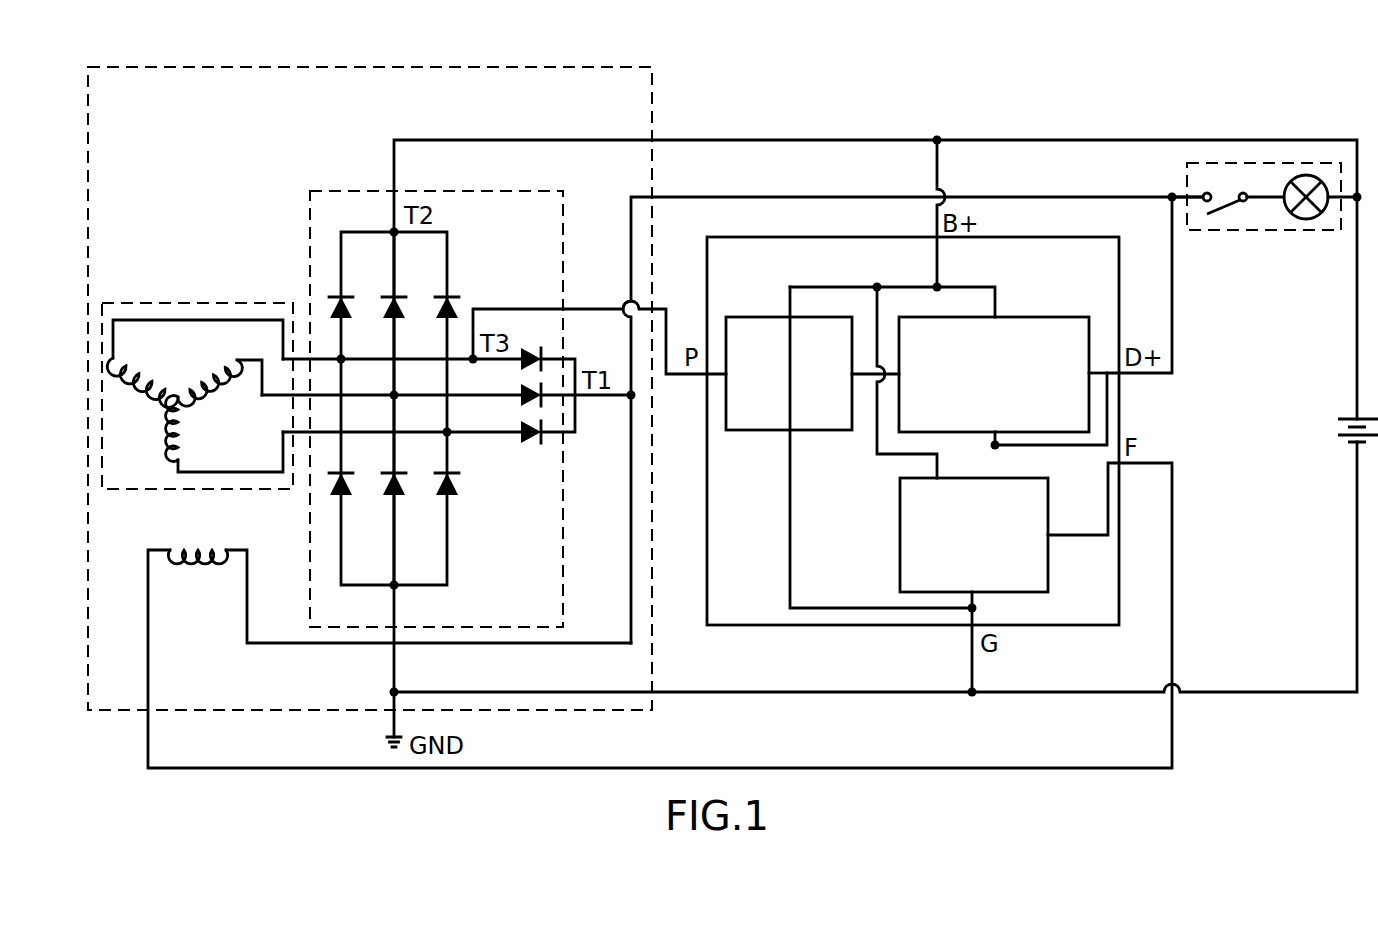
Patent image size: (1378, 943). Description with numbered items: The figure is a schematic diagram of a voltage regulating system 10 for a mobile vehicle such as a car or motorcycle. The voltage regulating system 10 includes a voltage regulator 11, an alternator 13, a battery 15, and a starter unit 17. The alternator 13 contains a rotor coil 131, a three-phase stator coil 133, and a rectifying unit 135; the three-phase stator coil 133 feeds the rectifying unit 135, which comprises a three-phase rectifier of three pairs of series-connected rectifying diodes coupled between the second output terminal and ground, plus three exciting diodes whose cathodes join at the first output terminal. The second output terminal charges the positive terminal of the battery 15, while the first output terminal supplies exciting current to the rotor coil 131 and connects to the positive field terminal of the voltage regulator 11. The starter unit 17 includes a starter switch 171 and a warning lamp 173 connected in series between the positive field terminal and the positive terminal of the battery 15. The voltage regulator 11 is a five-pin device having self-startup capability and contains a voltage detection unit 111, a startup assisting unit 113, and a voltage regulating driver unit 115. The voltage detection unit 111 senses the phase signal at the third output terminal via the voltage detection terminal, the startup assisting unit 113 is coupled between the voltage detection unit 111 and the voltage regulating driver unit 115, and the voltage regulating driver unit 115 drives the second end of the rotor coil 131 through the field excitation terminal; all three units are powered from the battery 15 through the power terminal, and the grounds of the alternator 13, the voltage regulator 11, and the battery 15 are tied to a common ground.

The voltage regulating system 10 is at (1072, 74).
The voltage regulator 11 is at (880, 625).
The voltage detection unit 111 is at (760, 317).
The startup assisting unit 113 is at (1030, 317).
The voltage regulating driver unit 115 is at (900, 518).
The alternator 13 is at (652, 90).
The rotor coil 131 is at (199, 558).
The three-phase stator coil 133 is at (200, 303).
The rectifying unit 135 is at (335, 191).
The battery 15 is at (1338, 427).
The starter unit 17 is at (1268, 163).
The starter switch 171 is at (1224, 195).
The warning lamp 173 is at (1306, 175).